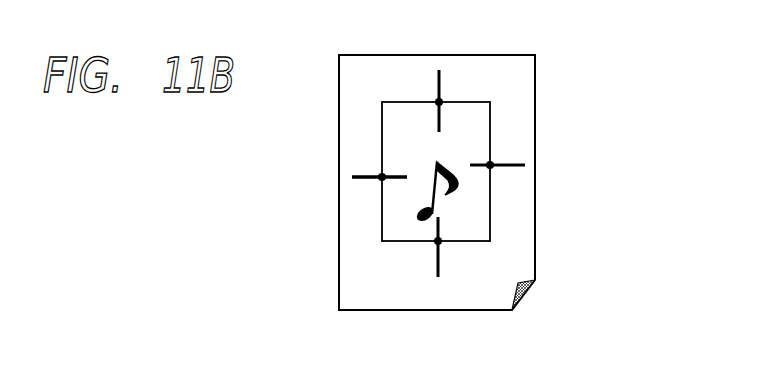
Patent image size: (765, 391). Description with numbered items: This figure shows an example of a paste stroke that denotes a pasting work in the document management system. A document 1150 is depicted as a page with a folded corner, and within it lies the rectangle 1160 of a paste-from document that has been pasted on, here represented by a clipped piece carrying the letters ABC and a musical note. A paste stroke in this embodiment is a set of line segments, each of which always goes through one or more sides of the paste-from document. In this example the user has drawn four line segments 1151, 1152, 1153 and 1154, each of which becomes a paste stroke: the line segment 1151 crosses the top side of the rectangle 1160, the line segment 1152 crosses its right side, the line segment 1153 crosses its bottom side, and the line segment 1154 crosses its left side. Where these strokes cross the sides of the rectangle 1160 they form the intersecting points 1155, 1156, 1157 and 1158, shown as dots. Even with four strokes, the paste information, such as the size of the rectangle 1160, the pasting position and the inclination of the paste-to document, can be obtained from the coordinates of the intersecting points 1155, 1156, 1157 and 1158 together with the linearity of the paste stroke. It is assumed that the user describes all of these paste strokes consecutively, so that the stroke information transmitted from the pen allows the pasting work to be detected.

The paste-from document 1150 is at (536, 68).
The line segment 1151 is at (441, 70).
The line segment 1152 is at (525, 163).
The line segment 1153 is at (438, 276).
The line segment 1154 is at (352, 180).
The intersecting point 1155 is at (437, 101).
The intersecting point 1156 is at (492, 167).
The intersecting point 1157 is at (440, 242).
The intersecting point 1158 is at (380, 176).
The rectangle 1160 is at (470, 102).